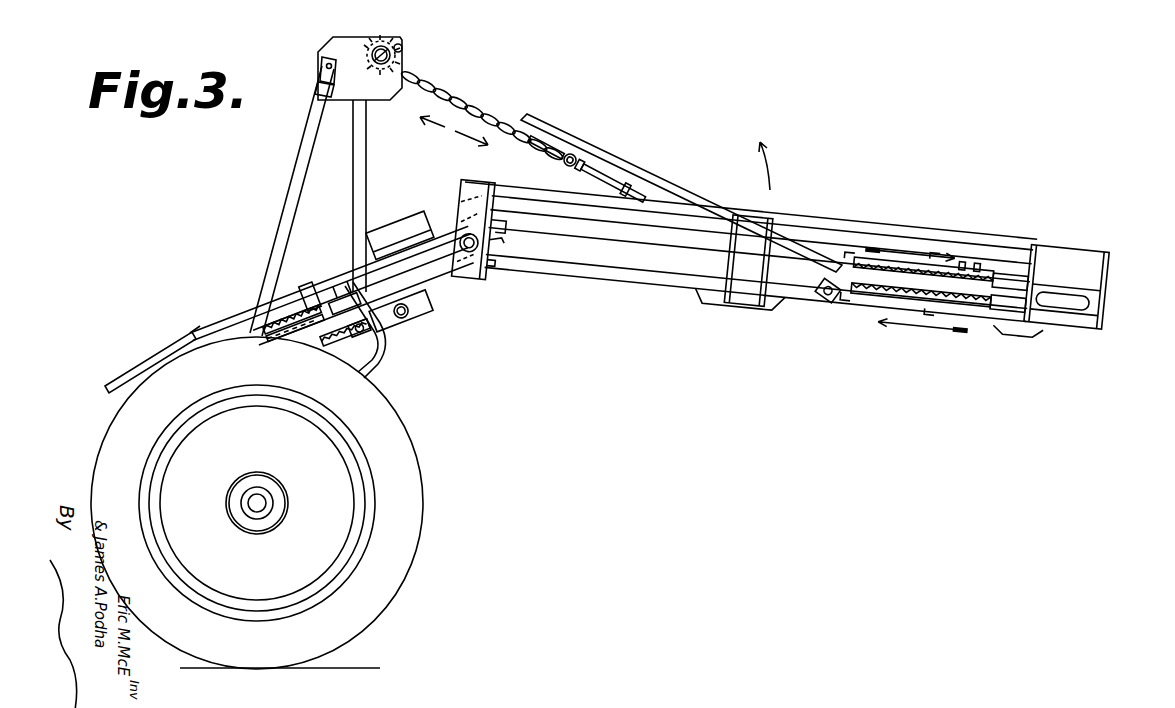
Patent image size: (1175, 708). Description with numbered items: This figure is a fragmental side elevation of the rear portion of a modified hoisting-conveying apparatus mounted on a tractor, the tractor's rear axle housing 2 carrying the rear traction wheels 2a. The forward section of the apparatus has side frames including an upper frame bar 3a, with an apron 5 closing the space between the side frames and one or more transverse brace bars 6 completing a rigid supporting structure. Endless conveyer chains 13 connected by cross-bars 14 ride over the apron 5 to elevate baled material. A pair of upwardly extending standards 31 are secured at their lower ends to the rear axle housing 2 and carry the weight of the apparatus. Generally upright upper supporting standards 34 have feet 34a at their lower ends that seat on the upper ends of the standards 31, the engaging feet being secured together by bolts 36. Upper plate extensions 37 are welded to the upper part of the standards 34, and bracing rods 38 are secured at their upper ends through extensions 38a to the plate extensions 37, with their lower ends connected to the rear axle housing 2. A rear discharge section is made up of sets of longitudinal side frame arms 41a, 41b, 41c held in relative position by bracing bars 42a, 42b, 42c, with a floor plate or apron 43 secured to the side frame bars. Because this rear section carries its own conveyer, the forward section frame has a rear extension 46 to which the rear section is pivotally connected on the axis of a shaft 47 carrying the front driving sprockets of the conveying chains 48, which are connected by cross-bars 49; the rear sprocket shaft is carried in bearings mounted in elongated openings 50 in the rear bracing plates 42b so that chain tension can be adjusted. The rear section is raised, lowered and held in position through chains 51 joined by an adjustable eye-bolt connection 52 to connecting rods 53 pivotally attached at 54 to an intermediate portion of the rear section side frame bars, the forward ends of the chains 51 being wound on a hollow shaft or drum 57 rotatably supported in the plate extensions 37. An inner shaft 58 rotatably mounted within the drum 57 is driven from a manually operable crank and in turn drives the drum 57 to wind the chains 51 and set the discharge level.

The rear axle housing 2 is at (275, 503).
The rear traction wheels 2a is at (257, 503).
The frame bar 3a is at (148, 378).
The apron 5 is at (345, 304).
The transverse brace bar 6 is at (389, 315).
The endless conveyer chains 13 is at (292, 319).
The cross-bars 14 is at (295, 327).
The supporting standards 31 is at (385, 355).
The upright supporting standards 34 is at (352, 174).
The feet 34a is at (327, 273).
The bolts 36 is at (307, 278).
The upper plate extensions 37 is at (360, 68).
The bracing rods 38 is at (305, 157).
The extensions 38a is at (320, 78).
The longitudinal side frame arm 41a is at (751, 213).
The longitudinal side frame arm 41b is at (759, 254).
The longitudinal side frame arm 41c is at (755, 298).
The bracing bar 42a is at (745, 246).
The rear bracing plate 42b is at (1053, 276).
The bracing bar 42c is at (464, 219).
The floor plate 43 is at (935, 284).
The rear extension 46 is at (393, 218).
The shaft 47 is at (472, 247).
The conveying chains 48 is at (969, 234).
The cross-bars 49 is at (996, 246).
The elongated openings 50 is at (1088, 304).
The chains 51 is at (452, 103).
The adjustable eye-bolt connection 52 is at (578, 152).
The connecting rods 53 is at (680, 185).
The pivotal attachment 54 is at (831, 256).
The hollow shaft or drum 57 is at (392, 46).
The inner shaft 58 is at (400, 53).